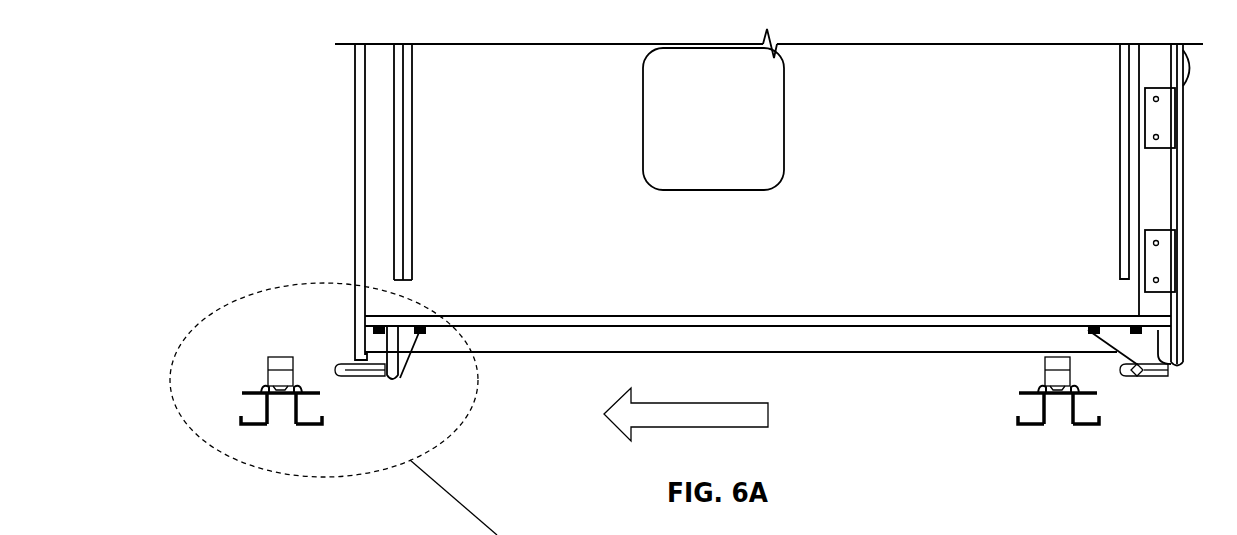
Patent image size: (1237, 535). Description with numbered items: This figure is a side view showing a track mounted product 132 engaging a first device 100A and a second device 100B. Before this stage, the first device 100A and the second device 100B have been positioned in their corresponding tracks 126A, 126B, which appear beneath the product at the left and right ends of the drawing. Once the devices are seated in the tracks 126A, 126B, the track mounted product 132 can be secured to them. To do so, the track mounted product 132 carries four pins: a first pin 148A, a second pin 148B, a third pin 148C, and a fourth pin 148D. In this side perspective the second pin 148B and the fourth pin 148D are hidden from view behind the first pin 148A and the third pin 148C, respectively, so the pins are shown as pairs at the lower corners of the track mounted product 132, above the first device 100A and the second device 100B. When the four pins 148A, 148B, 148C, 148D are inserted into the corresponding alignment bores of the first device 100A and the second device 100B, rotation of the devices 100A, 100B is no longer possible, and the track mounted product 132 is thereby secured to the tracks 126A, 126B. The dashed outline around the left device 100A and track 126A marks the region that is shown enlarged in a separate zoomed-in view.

The track mounted product 132 is at (332, 205).
The first device 100A is at (255, 364).
The track 126A is at (236, 394).
The first pin 148A is at (362, 378).
The second pin 148B is at (371, 378).
The second device 100B is at (1034, 367).
The track 126B is at (1106, 397).
The third pin 148C is at (1137, 374).
The fourth pin 148D is at (1151, 374).